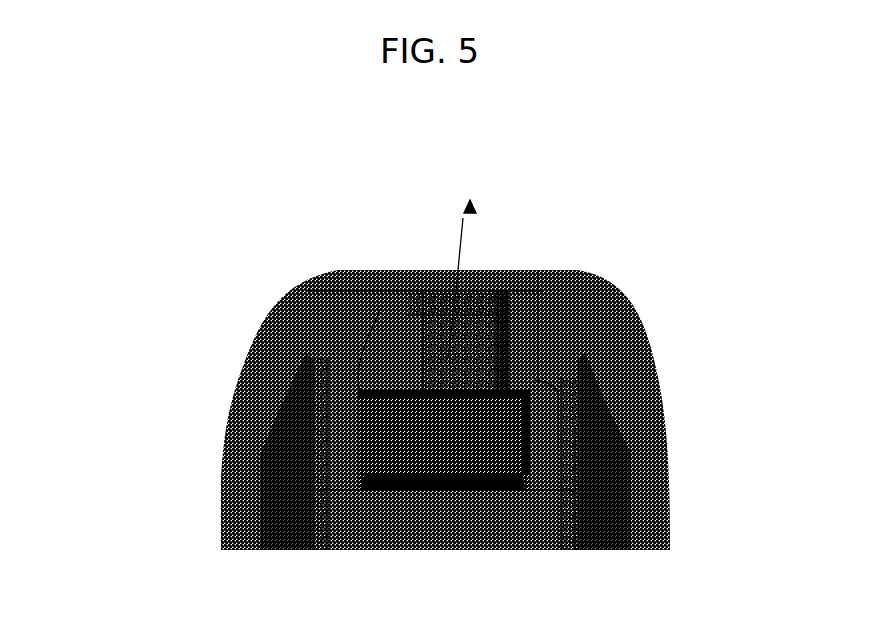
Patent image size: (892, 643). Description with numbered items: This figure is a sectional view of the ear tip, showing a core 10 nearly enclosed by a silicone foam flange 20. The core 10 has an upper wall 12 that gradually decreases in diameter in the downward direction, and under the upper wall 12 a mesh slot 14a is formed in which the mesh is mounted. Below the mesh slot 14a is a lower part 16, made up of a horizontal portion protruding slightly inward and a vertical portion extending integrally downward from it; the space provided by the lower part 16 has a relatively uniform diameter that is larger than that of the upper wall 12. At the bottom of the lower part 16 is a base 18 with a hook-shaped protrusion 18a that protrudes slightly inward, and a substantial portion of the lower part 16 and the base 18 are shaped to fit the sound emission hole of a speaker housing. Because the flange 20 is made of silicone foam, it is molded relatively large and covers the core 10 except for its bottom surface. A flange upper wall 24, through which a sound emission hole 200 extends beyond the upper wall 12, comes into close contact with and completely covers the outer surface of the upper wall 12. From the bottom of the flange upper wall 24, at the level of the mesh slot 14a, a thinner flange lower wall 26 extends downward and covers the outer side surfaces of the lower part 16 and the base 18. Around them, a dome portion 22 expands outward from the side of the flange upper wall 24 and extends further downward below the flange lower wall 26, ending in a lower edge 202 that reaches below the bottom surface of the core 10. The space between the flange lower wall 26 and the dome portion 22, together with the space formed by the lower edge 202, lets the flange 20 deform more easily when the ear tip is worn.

The core 10 is at (342, 395).
The upper wall 12 is at (500, 340).
The mesh slot 14a is at (510, 358).
The lower part 16 is at (540, 410).
The base 18 is at (532, 460).
The hook-shaped protrusion 18a is at (505, 460).
The flange 20 is at (640, 440).
The dome portion 22 is at (252, 395).
The flange upper wall 24 is at (328, 288).
The flange lower wall 26 is at (305, 440).
The sound emission hole 200 is at (413, 282).
The lower edge 202 is at (342, 512).